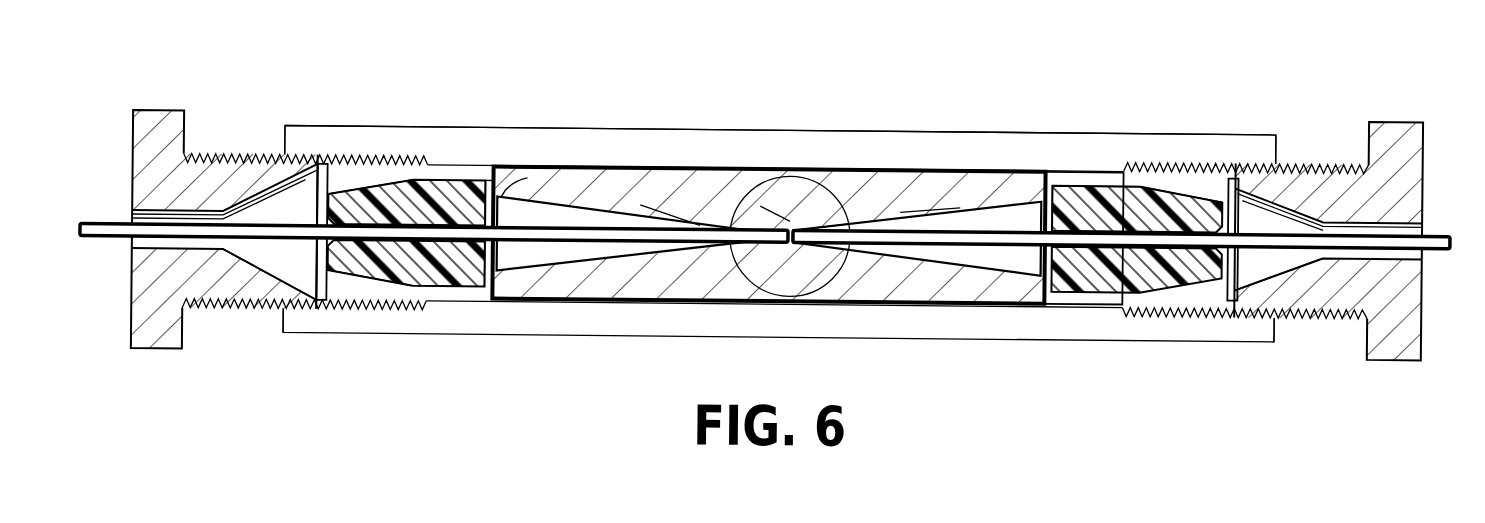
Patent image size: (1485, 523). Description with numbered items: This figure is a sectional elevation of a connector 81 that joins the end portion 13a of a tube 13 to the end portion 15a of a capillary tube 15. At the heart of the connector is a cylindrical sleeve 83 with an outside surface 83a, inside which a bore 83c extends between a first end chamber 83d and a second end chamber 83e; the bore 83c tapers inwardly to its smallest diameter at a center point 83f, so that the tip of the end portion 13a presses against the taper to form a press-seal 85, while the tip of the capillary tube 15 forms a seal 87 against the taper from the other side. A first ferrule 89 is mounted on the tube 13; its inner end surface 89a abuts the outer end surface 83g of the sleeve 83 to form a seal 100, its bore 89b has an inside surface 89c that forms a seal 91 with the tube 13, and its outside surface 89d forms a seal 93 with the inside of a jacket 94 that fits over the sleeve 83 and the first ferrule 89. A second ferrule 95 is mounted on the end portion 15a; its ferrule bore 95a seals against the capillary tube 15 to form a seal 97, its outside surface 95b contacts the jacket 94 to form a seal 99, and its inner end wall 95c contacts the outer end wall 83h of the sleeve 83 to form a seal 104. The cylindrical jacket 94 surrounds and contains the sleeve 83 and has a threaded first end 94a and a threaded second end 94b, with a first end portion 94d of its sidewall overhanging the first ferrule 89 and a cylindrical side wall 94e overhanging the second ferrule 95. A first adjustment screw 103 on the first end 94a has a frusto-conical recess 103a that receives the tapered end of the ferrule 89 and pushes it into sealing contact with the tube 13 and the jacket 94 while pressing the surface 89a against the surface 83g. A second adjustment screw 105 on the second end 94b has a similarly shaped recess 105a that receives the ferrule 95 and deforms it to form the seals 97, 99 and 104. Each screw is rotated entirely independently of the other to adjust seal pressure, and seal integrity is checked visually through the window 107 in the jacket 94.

The tube 13 is at (108, 224).
The end portion of tube 13a is at (667, 245).
The capillary tube 15 is at (1436, 225).
The end portion of capillary tube 15a is at (828, 237).
The connector 81 is at (893, 88).
The cylindrical sleeve 83 is at (633, 183).
The outside surface of sleeve 83a is at (548, 165).
The bore 83c is at (680, 217).
The first end chamber 83d is at (577, 287).
The second end chamber 83e is at (965, 255).
The center point of bore 83f is at (763, 220).
The outer end surface of sleeve 83g is at (457, 176).
The outer end wall of sleeve 83h is at (1057, 215).
The press-seal 85 is at (740, 224).
The seal 87 is at (793, 222).
The first ferrule 89 is at (380, 183).
The inner end surface of first ferrule 89a is at (505, 208).
The bore of first ferrule 89b is at (318, 195).
The inside surface of first ferrule bore 89c is at (396, 250).
The outside surface of first ferrule 89d is at (352, 198).
The seal 91 is at (422, 280).
The seal 93 is at (465, 288).
The jacket 94 is at (652, 307).
The threaded first end of jacket 94a is at (300, 150).
The threaded second end of jacket 94b is at (1258, 124).
The first end portion of jacket sidewall 94d is at (305, 317).
The cylindrical side wall of jacket 94e is at (1238, 320).
The second ferrule 95 is at (1153, 213).
The ferrule bore 95a is at (1187, 210).
The outside surface of second ferrule 95b is at (1112, 190).
The inner end wall of second ferrule 95c is at (933, 213).
The seal 97 is at (1095, 176).
The seal 99 is at (1063, 182).
The seal 100 is at (496, 205).
The first adjustment screw 103 is at (185, 320).
The frusto-conical recess 103a is at (268, 250).
The seal 104 is at (553, 166).
The second adjustment screw 105 is at (1368, 340).
The recess 105a is at (1277, 260).
The window 107 is at (747, 292).